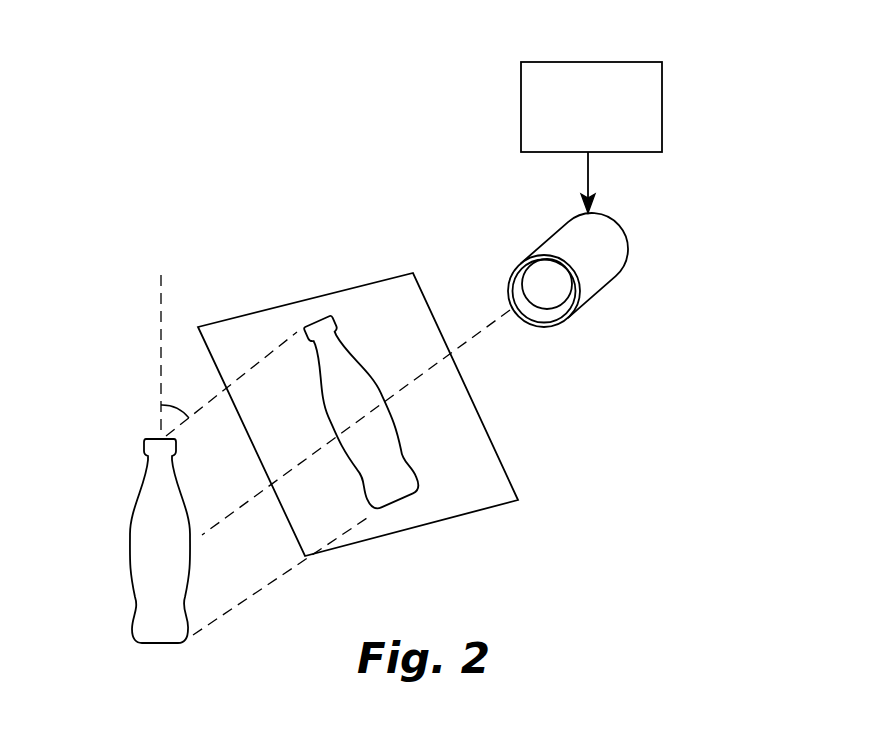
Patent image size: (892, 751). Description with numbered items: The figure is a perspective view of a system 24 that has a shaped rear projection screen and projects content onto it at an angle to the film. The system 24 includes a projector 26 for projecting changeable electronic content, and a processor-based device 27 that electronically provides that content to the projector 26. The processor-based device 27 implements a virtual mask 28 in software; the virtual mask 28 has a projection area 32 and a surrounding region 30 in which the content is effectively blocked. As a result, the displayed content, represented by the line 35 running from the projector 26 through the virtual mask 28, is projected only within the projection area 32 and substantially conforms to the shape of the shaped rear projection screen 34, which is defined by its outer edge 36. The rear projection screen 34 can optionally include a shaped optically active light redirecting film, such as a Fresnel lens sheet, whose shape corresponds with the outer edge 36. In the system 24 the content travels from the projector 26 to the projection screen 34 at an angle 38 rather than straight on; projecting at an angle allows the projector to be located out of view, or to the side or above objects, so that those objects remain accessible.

The system 24 is at (492, 200).
The projector 26 is at (612, 258).
The processor-based device 27 is at (627, 62).
The virtual mask 28 is at (385, 414).
The region 30 is at (502, 483).
The projection area 32 is at (313, 322).
The shaped rear projection screen 34 is at (157, 633).
The line 35 is at (473, 337).
The outer edge 36 is at (128, 570).
The angle 38 is at (184, 408).